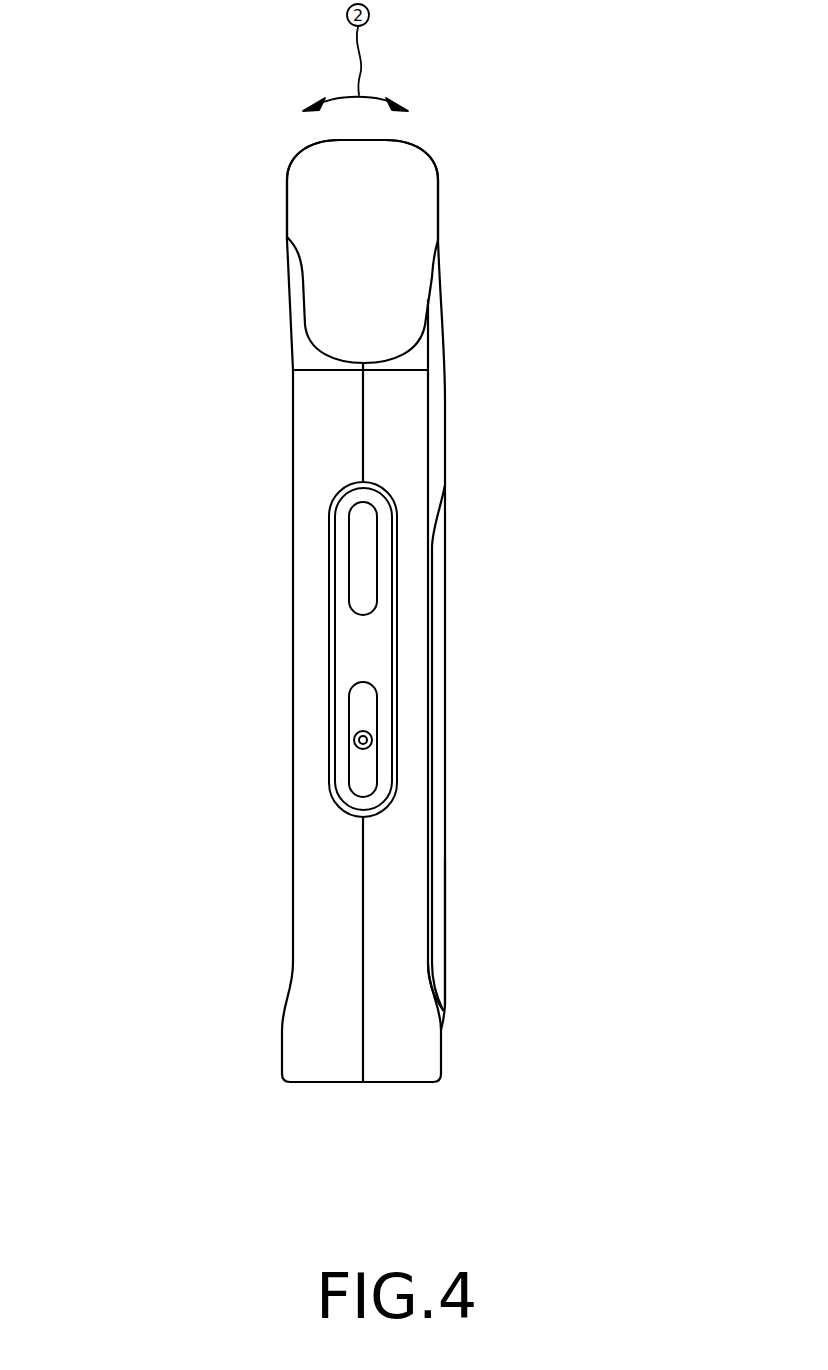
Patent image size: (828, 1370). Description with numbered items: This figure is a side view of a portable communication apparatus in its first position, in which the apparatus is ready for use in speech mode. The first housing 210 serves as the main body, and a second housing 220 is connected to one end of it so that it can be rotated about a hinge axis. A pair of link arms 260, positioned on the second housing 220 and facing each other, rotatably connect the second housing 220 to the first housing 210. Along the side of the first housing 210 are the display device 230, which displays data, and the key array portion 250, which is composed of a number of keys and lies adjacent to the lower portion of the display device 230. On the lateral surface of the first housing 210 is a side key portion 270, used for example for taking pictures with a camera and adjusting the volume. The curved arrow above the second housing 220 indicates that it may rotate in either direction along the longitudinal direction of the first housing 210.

The first housing 210 is at (264, 754).
The second housing 220 is at (433, 157).
The display device 230 is at (446, 553).
The key array portion 250 is at (446, 905).
The link arm 260 is at (370, 308).
The side key portion 270 is at (353, 661).